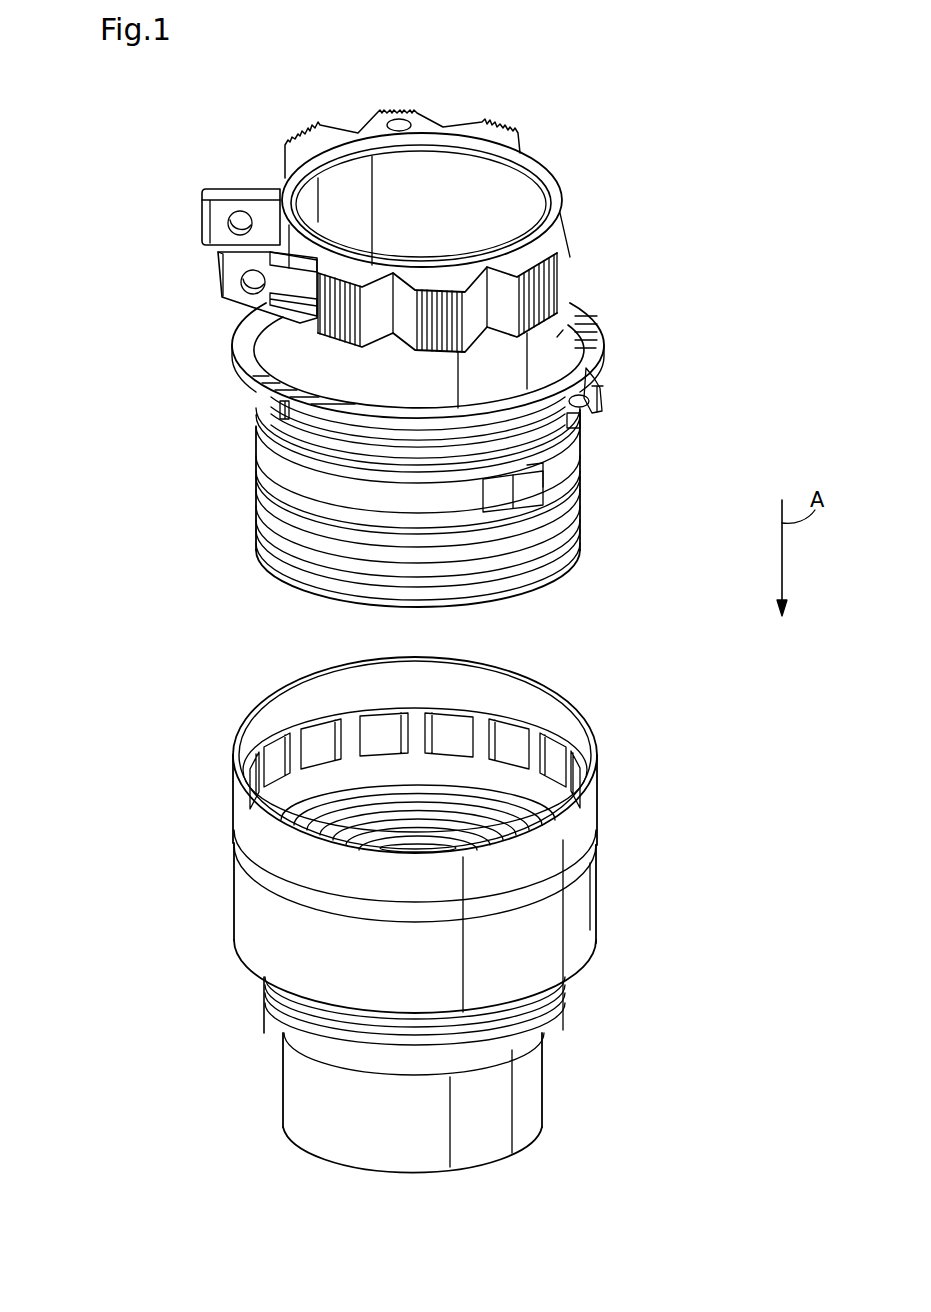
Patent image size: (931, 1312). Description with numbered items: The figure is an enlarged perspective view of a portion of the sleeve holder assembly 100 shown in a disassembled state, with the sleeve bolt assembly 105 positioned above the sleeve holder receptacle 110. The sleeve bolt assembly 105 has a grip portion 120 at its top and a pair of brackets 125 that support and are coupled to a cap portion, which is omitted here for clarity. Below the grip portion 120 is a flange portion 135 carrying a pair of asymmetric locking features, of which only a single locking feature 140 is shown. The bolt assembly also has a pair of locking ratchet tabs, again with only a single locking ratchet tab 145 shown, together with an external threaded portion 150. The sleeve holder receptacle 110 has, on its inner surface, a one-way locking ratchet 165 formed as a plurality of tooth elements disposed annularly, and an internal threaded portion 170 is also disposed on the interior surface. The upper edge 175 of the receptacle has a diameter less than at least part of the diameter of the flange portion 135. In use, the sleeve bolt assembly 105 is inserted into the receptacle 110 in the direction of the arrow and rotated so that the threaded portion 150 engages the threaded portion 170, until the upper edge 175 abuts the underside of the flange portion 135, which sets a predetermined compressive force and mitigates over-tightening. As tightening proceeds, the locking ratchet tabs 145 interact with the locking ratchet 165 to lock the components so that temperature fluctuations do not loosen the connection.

The sleeve holder assembly 100 is at (105, 1137).
The sleeve bolt assembly 105 is at (180, 133).
The sleeve holder receptacle 110 is at (178, 688).
The grip portion 120 is at (558, 271).
The brackets 125 is at (217, 186).
The flange portion 135 is at (583, 328).
The asymmetric locking feature 140 is at (284, 415).
The locking ratchet tab 145 is at (533, 491).
The threaded portion 150 is at (575, 532).
The one-way locking ratchet 165 is at (513, 750).
The threaded portion 170 is at (598, 828).
The upper edge 175 is at (272, 690).